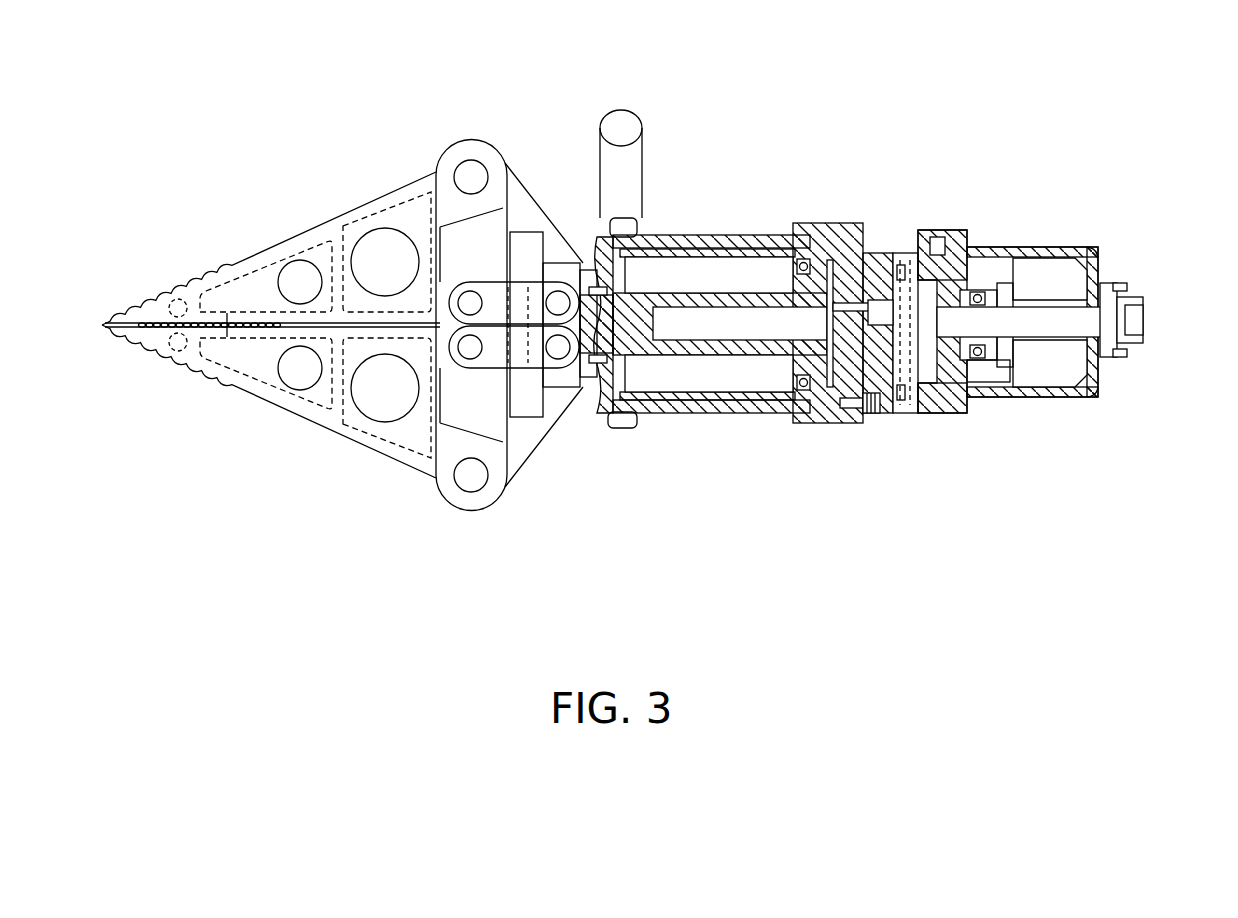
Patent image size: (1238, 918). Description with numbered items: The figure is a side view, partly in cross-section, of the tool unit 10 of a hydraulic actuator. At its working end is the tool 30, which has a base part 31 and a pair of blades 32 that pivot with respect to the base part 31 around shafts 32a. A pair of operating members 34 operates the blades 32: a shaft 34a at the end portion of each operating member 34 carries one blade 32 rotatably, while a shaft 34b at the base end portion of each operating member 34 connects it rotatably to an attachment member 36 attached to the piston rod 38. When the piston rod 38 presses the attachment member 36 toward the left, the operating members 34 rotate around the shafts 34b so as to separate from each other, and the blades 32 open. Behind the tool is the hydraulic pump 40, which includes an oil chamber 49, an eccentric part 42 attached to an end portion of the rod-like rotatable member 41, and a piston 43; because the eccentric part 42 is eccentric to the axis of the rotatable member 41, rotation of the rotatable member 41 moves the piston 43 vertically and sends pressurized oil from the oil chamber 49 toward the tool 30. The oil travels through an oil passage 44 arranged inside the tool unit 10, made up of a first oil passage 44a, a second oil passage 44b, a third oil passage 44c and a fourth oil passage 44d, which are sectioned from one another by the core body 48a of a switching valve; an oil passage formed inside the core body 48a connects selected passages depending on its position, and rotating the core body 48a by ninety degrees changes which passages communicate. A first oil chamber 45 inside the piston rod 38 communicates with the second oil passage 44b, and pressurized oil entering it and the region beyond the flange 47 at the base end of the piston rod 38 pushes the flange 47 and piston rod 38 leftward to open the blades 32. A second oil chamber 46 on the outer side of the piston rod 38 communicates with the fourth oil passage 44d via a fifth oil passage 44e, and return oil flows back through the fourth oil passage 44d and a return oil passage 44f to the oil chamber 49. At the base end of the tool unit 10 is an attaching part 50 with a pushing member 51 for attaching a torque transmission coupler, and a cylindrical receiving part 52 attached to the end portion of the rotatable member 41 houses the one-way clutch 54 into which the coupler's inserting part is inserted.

The tool unit 10 is at (770, 134).
The tool 30 is at (509, 182).
The base part 31 is at (522, 205).
The blades 32 is at (333, 223).
The shafts 32a is at (470, 174).
The operating members 34 is at (500, 283).
The shaft 34a is at (468, 297).
The shaft 34b is at (558, 298).
The attachment member 36 is at (567, 400).
The piston rod 38 is at (633, 362).
The hydraulic pump 40 is at (1047, 248).
The rotatable member 41 is at (1047, 337).
The eccentric part 42 is at (992, 320).
The piston 43 is at (968, 360).
The oil passage 44 is at (937, 413).
The first oil passage 44a is at (950, 385).
The second oil passage 44b is at (878, 345).
The third oil passage 44c is at (898, 300).
The fourth oil passage 44d is at (885, 305).
The fifth oil passage 44e is at (705, 243).
The return oil passage 44f is at (947, 267).
The first oil chamber 45 is at (711, 335).
The second oil chamber 46 is at (711, 285).
The flange 47 is at (785, 272).
The core body 48a is at (898, 323).
The oil chamber 49 is at (1024, 291).
The attaching part 50 is at (1117, 358).
The pushing member 51 is at (1120, 282).
The receiving part 52 is at (1142, 345).
The one-way clutch 54 is at (1144, 317).